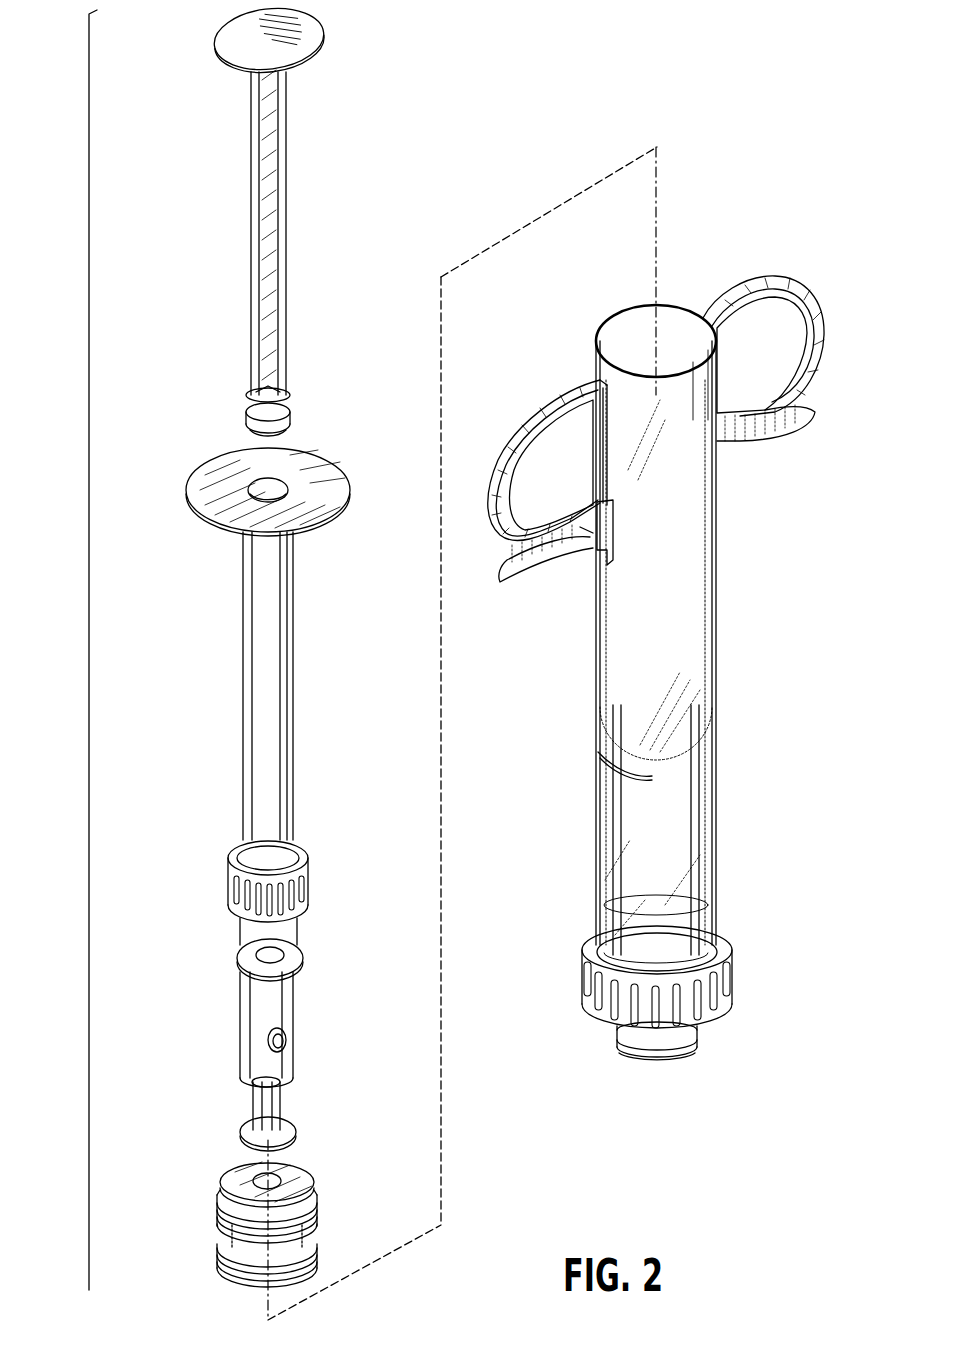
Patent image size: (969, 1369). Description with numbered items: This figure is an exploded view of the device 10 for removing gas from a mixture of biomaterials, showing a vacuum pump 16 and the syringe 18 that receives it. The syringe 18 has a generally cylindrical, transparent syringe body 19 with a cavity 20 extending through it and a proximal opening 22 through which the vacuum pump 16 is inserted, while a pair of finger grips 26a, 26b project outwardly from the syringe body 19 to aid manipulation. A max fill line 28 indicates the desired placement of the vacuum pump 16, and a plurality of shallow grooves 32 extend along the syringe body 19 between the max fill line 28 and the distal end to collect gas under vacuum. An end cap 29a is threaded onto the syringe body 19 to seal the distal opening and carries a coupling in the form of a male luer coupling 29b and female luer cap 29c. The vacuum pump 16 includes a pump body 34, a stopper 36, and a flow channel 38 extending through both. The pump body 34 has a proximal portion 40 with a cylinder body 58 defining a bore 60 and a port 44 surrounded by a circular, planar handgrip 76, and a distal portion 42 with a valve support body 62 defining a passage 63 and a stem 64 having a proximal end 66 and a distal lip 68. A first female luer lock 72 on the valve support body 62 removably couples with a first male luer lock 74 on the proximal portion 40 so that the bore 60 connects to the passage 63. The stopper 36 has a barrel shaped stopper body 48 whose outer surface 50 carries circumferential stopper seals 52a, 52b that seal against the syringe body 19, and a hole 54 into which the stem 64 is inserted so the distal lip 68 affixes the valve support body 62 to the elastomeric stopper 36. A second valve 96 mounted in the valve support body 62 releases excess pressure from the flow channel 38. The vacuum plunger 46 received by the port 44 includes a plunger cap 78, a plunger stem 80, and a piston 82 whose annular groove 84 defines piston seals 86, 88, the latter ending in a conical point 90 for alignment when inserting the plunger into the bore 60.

The device 10 is at (716, 60).
The vacuum pump 16 is at (88, 606).
The syringe 18 is at (732, 274).
The syringe body 19 is at (718, 546).
The cavity 20 is at (674, 640).
The proximal opening 22 is at (598, 332).
The finger grip 26a is at (532, 418).
The finger grip 26b is at (787, 284).
The max fill line 28 is at (598, 762).
The end cap 29a is at (733, 983).
The male luer coupling 29b is at (700, 1044).
The female luer cap 29c is at (680, 1060).
The grooves 32 is at (600, 703).
The pump body 34 is at (150, 878).
The stopper 36 is at (165, 1218).
The flow channel 38 is at (258, 485).
The proximal portion 40 is at (265, 686).
The distal portion 42 is at (265, 1029).
The port 44 is at (263, 480).
The vacuum plunger 46 is at (280, 199).
The stopper body 48 is at (267, 1211).
The outer surface 50 is at (296, 1248).
The stopper seal 52a is at (321, 1200).
The stopper seal 52b is at (216, 1243).
The hole 54 is at (284, 1178).
The cylinder body 58 is at (292, 660).
The bore 60 is at (290, 496).
The valve support body 62 is at (294, 1000).
The passage 63 is at (276, 955).
The stem 64 is at (281, 1094).
The proximal end 66 is at (250, 946).
The distal lip 68 is at (296, 1131).
The first female luer lock 72 is at (265, 940).
The first male luer lock 74 is at (308, 878).
The handgrip 76 is at (200, 479).
The plunger cap 78 is at (320, 42).
The plunger stem 80 is at (289, 190).
The piston 82 is at (272, 390).
The annular groove 84 is at (288, 406).
The piston seal 86 is at (284, 384).
The piston seal 88 is at (292, 420).
The conical point 90 is at (282, 435).
The second valve 96 is at (287, 1038).